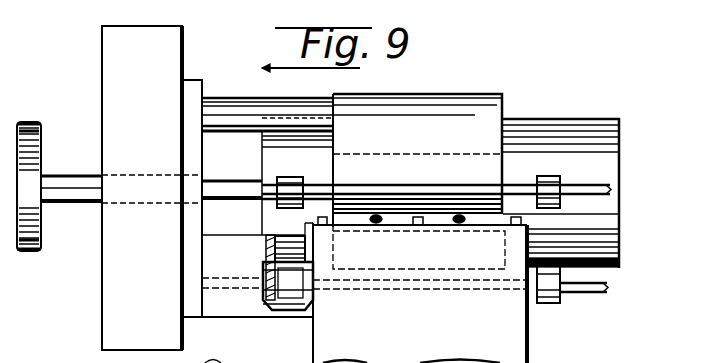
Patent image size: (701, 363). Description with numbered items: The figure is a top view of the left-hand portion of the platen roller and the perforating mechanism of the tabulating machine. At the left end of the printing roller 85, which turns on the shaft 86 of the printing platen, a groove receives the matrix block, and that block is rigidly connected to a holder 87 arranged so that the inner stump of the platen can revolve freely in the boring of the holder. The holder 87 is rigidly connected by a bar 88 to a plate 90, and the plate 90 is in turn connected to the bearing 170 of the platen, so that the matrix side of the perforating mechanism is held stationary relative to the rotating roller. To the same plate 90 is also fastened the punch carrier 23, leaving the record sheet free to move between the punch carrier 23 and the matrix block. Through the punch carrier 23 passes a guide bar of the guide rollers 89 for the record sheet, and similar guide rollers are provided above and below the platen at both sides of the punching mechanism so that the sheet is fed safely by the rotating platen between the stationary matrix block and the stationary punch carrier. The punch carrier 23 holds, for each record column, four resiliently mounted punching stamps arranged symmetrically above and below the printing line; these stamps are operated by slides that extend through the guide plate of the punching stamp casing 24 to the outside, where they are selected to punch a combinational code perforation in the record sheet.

The bearing 170 is at (107, 68).
The plate 90 is at (198, 83).
The bar 88 is at (245, 105).
The holder 87 is at (427, 100).
The printing roller 85 is at (567, 125).
The shaft 86 is at (234, 184).
The guide rollers 89 is at (287, 188).
The punch carrier 23 is at (233, 309).
The punching stamp casing 24 is at (520, 331).